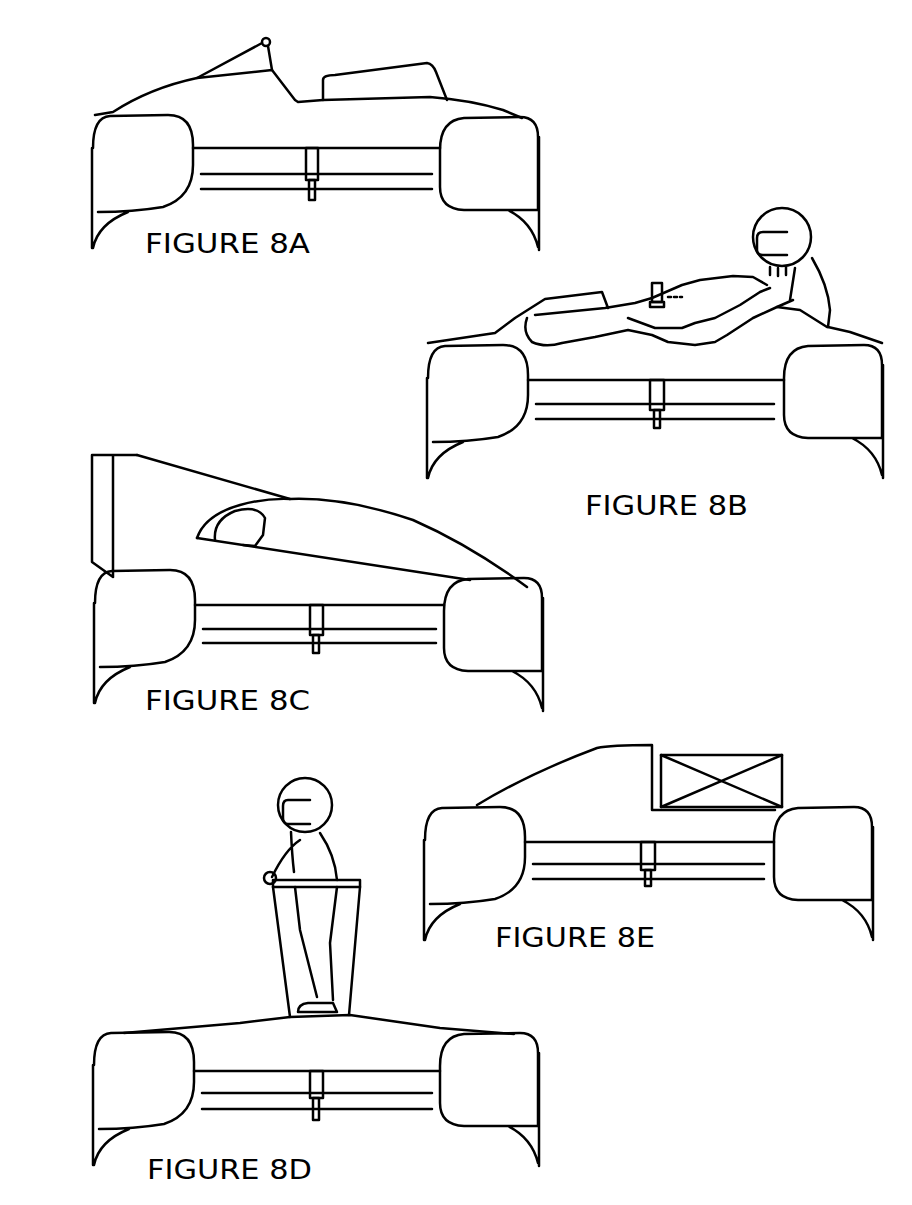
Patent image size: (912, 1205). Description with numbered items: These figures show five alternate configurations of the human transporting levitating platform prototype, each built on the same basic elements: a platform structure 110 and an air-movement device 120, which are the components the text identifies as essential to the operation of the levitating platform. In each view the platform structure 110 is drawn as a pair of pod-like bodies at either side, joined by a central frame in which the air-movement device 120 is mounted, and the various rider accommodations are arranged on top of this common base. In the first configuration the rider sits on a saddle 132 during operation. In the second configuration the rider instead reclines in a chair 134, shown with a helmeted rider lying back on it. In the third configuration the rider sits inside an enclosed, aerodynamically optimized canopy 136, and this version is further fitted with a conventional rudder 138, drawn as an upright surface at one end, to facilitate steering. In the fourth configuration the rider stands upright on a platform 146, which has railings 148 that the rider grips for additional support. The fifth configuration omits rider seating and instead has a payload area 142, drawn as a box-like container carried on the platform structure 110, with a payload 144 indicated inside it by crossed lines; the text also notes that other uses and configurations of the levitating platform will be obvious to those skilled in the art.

In FIG. 8A, the platform structure 110 is at (155, 177).
In FIG. 8B, the platform structure 110 is at (495, 404).
In FIG. 8C, the platform structure 110 is at (160, 631).
In FIG. 8D, the platform structure 110 is at (158, 1094).
In FIG. 8E, the platform structure 110 is at (489, 866).
In FIG. 8A, the air-movement device 120 is at (315, 203).
In FIG. 8B, the air-movement device 120 is at (661, 430).
In FIG. 8C, the air-movement device 120 is at (318, 653).
In FIG. 8D, the air-movement device 120 is at (320, 1123).
In FIG. 8E, the air-movement device 120 is at (656, 887).
In FIG. 8A, the saddle 132 is at (413, 78).
In FIG. 8B, the chair 134 is at (833, 326).
In FIG. 8C, the canopy 136 is at (405, 516).
In FIG. 8C, the rudder 138 is at (103, 530).
In FIG. 8E, the payload area 142 is at (780, 810).
In FIG. 8E, the cargo 144 is at (735, 762).
In FIG. 8D, the platform 146 is at (352, 1010).
In FIG. 8D, the railings 148 is at (345, 880).